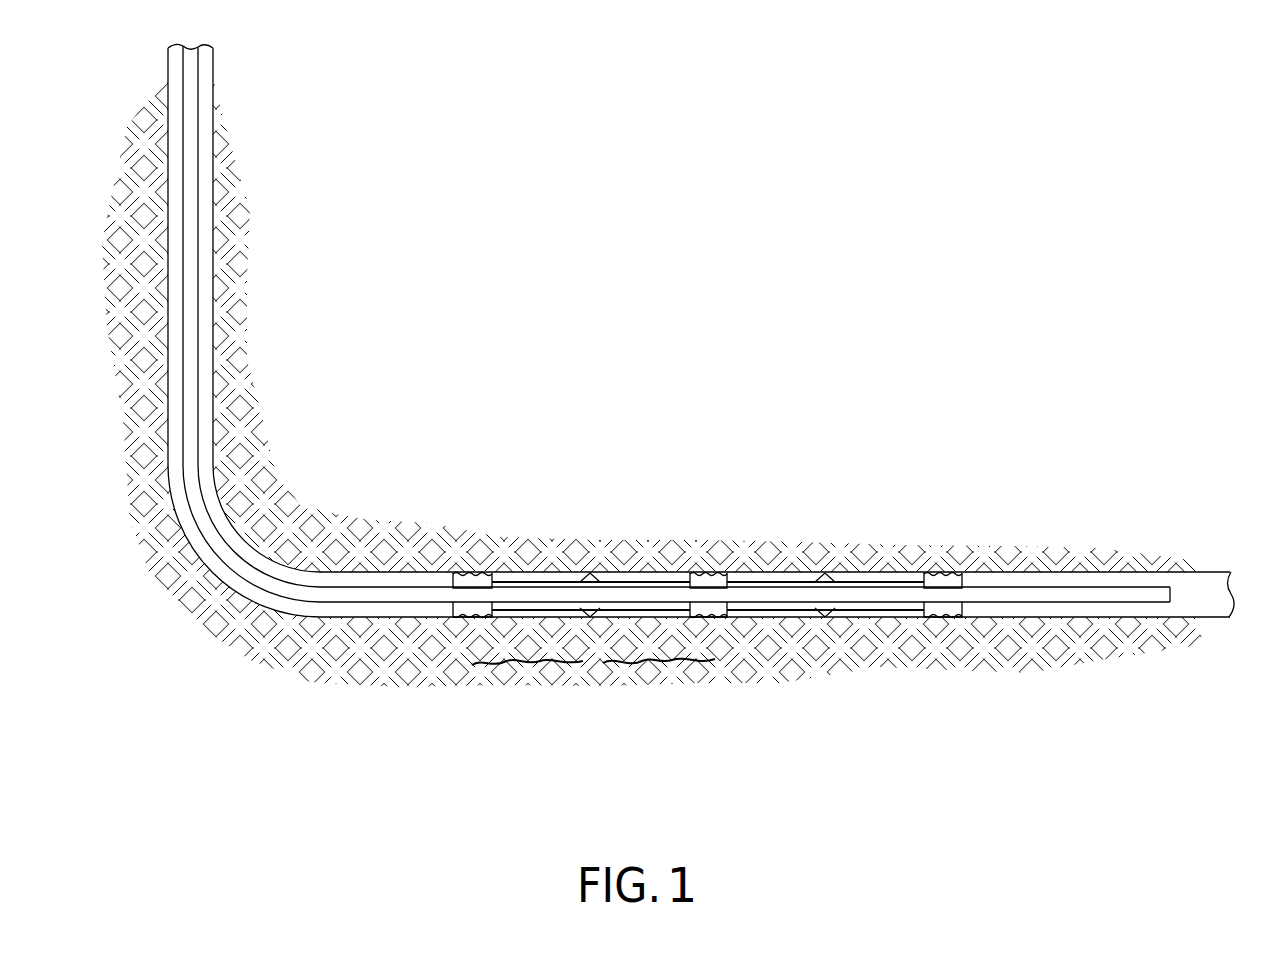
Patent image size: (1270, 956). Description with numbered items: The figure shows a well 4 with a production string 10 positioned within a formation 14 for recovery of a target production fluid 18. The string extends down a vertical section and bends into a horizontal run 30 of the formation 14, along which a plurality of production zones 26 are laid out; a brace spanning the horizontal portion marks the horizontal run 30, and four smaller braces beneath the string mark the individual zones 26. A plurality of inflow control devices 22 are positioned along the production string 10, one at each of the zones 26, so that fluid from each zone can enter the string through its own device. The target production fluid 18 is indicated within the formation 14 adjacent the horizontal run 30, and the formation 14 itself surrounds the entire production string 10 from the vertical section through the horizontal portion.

The well system 4 is at (701, 330).
The production string 10 is at (388, 590).
The formation 14 is at (882, 668).
The target production fluid 18 is at (657, 662).
The inflow control devices 22 is at (540, 582).
The zones 26 is at (477, 773).
The horizontal run 30 is at (332, 455).